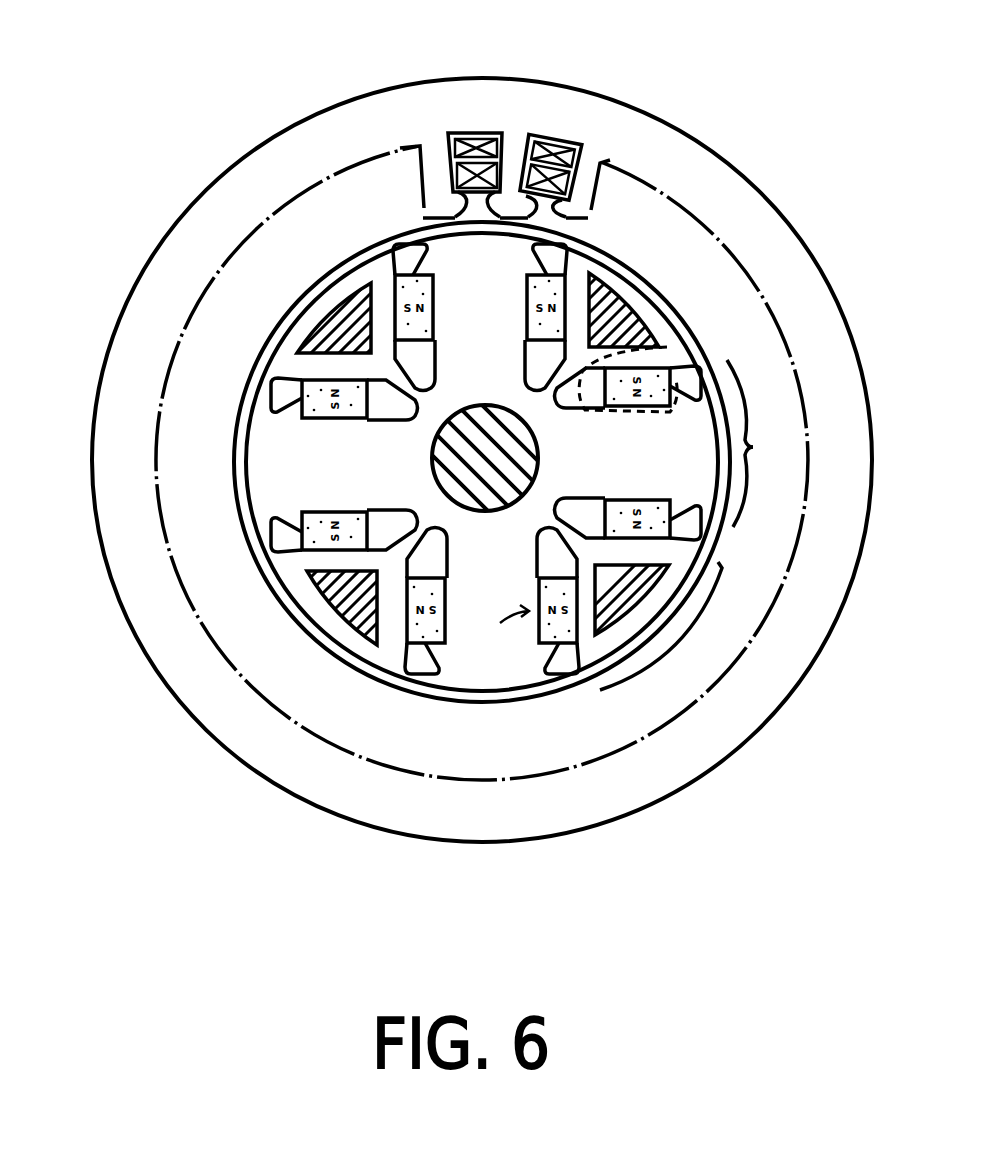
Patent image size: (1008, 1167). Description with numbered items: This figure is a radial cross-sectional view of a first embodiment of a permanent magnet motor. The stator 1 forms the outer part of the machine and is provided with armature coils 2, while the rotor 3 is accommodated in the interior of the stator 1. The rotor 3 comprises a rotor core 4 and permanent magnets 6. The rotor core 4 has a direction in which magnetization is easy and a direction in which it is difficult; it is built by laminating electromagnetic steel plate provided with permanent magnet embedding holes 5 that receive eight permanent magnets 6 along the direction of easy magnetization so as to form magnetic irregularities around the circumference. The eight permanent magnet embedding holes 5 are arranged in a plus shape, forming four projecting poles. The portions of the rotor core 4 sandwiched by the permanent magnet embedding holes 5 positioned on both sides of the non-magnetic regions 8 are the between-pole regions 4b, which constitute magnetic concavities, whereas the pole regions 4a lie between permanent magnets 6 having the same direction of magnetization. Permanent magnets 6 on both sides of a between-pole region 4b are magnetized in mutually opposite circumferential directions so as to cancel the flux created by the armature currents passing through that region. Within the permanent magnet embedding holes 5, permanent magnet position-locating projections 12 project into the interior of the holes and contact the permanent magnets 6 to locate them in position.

The stator 1 is at (147, 293).
The armature coils 2 is at (473, 131).
The rotor 3 is at (310, 274).
The rotor core 4 is at (267, 468).
The pole regions 4a is at (767, 443).
The between-pole regions 4b is at (664, 626).
The permanent magnet embedding holes 5 is at (410, 673).
The permanent magnets 6 is at (448, 627).
The non-magnetic regions 8 is at (603, 637).
The permanent magnet position-locating projections 12 is at (667, 347).